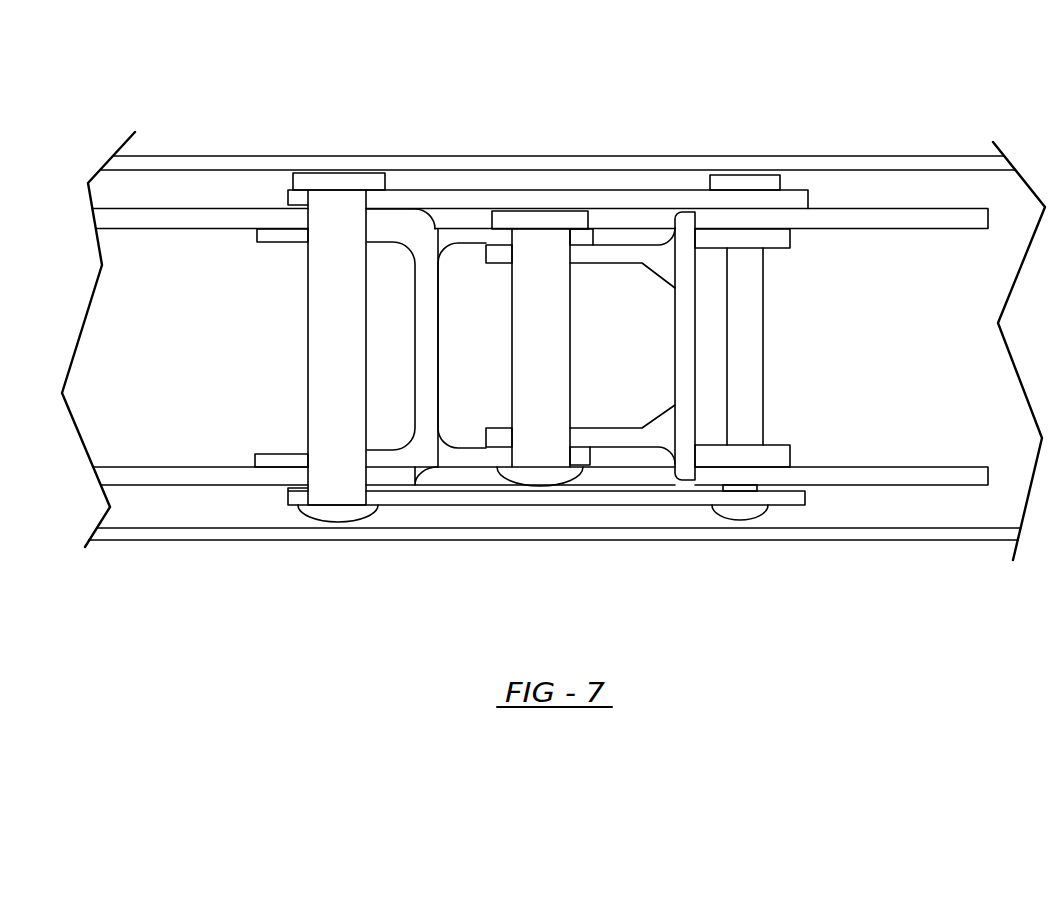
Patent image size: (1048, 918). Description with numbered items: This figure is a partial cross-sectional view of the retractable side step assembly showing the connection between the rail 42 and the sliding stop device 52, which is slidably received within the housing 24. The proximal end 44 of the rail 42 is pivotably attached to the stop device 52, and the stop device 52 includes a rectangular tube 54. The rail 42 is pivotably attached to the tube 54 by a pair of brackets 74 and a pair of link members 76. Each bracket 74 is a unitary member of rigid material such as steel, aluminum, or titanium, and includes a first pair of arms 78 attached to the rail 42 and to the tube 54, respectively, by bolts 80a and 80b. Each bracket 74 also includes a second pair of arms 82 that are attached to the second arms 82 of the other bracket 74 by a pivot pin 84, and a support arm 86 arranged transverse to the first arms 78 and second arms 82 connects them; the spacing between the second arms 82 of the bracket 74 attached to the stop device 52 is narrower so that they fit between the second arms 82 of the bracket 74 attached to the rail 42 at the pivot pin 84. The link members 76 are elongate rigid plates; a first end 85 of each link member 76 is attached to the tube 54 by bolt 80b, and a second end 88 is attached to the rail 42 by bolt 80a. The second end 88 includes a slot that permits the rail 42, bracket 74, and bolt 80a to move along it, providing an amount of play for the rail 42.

The housing 24 is at (841, 157).
The rail 42 is at (205, 207).
The proximal end 44 is at (180, 473).
The sliding stop device 52 is at (928, 233).
The rectangular tube 54 is at (875, 467).
The bracket 74 is at (450, 216).
The link member 76 is at (563, 190).
The first pair of arms 78 is at (272, 237).
The bolt 80a is at (327, 317).
The bolt 80b is at (743, 327).
The second pair of arms 82 is at (457, 243).
The pivot pin 84 is at (548, 460).
The first end 85 is at (793, 197).
The support arm 86 is at (438, 341).
The second end 88 is at (297, 198).